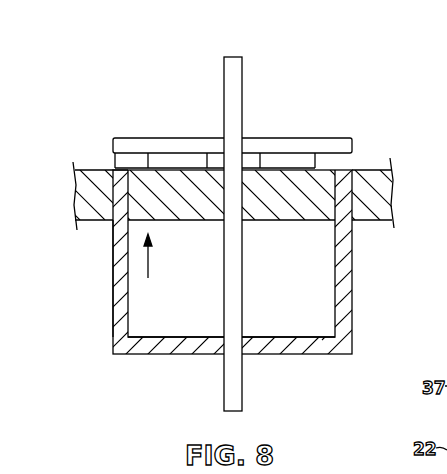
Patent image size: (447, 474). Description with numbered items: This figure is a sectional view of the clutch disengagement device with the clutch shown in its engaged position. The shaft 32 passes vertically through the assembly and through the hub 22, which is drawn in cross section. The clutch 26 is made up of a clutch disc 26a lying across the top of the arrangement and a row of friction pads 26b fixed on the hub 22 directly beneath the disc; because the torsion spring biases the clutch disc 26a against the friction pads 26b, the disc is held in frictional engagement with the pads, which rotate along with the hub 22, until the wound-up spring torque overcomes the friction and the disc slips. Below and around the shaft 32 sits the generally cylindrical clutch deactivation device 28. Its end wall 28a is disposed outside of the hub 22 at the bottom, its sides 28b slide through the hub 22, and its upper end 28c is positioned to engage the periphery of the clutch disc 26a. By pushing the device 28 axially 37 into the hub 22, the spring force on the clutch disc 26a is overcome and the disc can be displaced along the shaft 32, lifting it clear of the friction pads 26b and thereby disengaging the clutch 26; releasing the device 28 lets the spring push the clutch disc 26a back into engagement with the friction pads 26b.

The hub 22 is at (88, 198).
The clutch 26 is at (276, 94).
The clutch disc 26a is at (290, 143).
The friction pads 26b is at (178, 162).
The clutch deactivation device 28 is at (343, 270).
The end wall 28a is at (163, 347).
The sides 28b is at (120, 280).
The end 28c is at (113, 168).
The shaft 32 is at (233, 388).
The axial sliding direction 37 is at (150, 257).